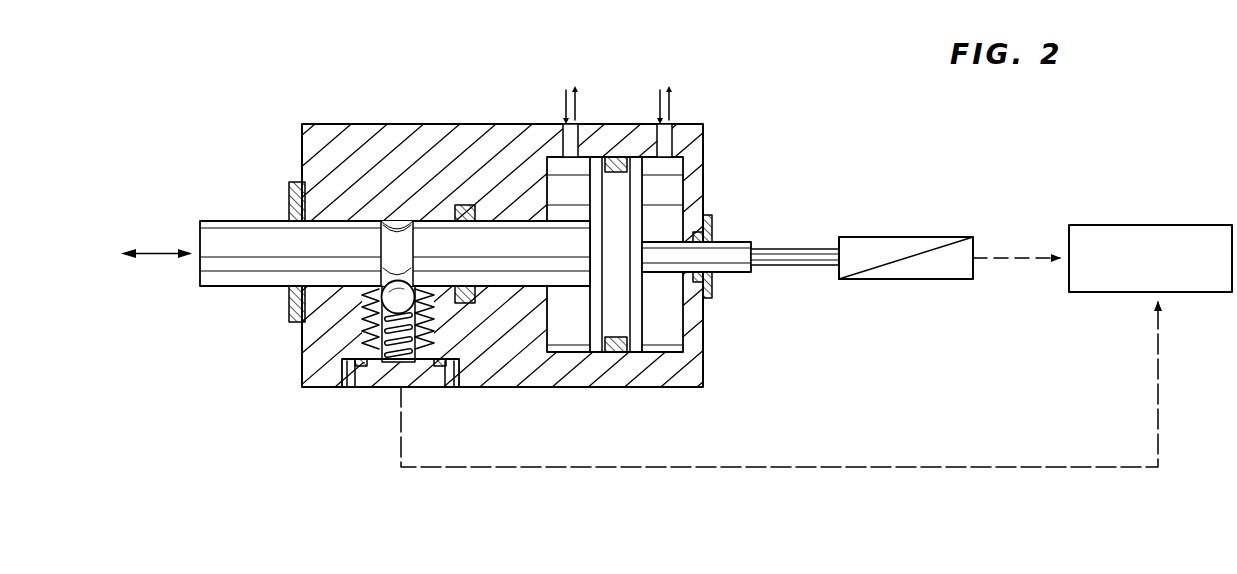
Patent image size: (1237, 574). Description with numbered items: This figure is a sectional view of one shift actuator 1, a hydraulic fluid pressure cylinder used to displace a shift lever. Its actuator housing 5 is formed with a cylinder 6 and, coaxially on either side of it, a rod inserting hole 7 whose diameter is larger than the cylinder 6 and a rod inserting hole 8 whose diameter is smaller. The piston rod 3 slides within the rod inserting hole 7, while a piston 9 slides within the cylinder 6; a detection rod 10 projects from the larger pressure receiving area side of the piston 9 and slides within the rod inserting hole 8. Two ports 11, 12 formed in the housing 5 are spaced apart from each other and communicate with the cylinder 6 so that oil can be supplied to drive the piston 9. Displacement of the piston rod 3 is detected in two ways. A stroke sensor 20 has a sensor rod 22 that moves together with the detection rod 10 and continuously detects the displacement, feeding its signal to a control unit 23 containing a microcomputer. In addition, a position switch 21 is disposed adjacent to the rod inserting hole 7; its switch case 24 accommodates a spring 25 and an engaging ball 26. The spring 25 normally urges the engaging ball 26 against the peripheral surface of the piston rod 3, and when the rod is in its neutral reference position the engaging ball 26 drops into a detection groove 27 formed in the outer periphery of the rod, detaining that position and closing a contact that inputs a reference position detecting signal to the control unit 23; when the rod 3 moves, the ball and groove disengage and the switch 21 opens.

The shift actuator 1 is at (437, 112).
The piston rod 3 is at (246, 232).
The actuator housing 5 is at (313, 165).
The cylinder 6 is at (683, 197).
The rod inserting hole 7 is at (337, 222).
The rod inserting hole 8 is at (684, 270).
The piston 9 is at (612, 312).
The detection rod 10 is at (728, 241).
The port 11 is at (563, 140).
The port 12 is at (668, 142).
The stroke sensor 20 is at (907, 241).
The position switch 21 is at (350, 327).
The sensor rod 22 is at (797, 249).
The control unit 23 is at (1170, 235).
The switch case 24 is at (362, 388).
The spring 25 is at (398, 340).
The engaging ball 26 is at (415, 305).
The detection groove 27 is at (393, 230).